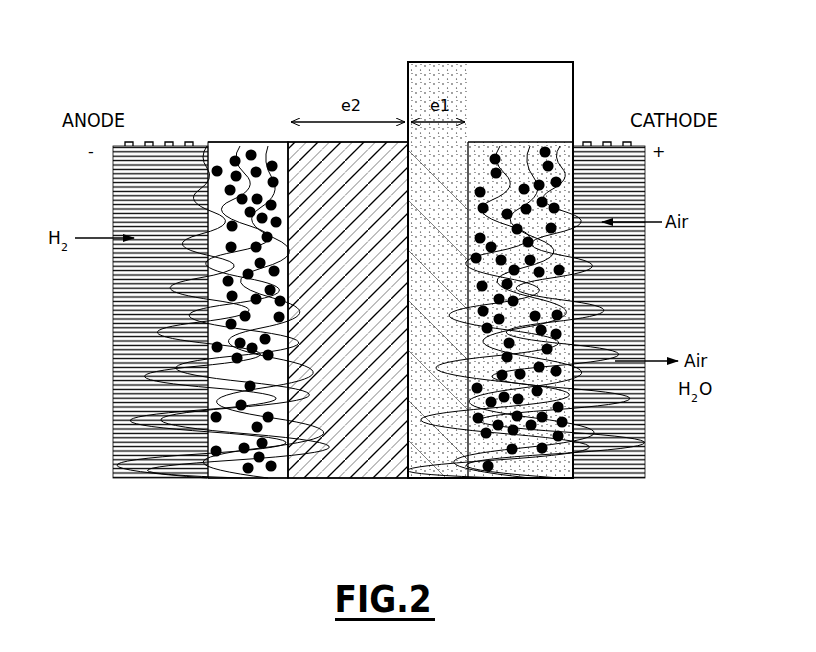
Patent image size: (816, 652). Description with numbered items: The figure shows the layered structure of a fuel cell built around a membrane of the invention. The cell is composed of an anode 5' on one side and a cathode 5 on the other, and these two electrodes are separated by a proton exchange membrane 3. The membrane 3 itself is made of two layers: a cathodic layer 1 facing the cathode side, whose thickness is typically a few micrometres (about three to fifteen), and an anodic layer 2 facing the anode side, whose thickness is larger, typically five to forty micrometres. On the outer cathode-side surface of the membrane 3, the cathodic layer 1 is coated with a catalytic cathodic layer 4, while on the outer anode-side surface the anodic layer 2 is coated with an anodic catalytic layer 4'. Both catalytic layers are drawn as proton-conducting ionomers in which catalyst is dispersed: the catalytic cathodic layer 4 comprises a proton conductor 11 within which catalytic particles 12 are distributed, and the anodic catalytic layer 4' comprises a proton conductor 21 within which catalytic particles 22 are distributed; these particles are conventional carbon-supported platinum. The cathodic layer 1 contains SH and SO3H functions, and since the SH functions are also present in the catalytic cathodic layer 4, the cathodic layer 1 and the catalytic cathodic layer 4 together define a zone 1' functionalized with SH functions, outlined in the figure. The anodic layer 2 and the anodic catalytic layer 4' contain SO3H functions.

The cathodic layer 1 is at (426, 260).
The zone functionalized with SH functions 1' is at (505, 242).
The anodic layer 2 is at (289, 148).
The proton exchange membrane 3 is at (288, 490).
The catalytic cathodic layer 4 is at (520, 336).
The anodic catalytic layer 4' is at (248, 336).
The cathode 5 is at (613, 336).
The anode 5' is at (160, 336).
The proton conductor 11 is at (575, 333).
The catalytic particles 12 is at (548, 140).
The proton conductor 21 is at (206, 348).
The catalytic particles 22 is at (230, 148).